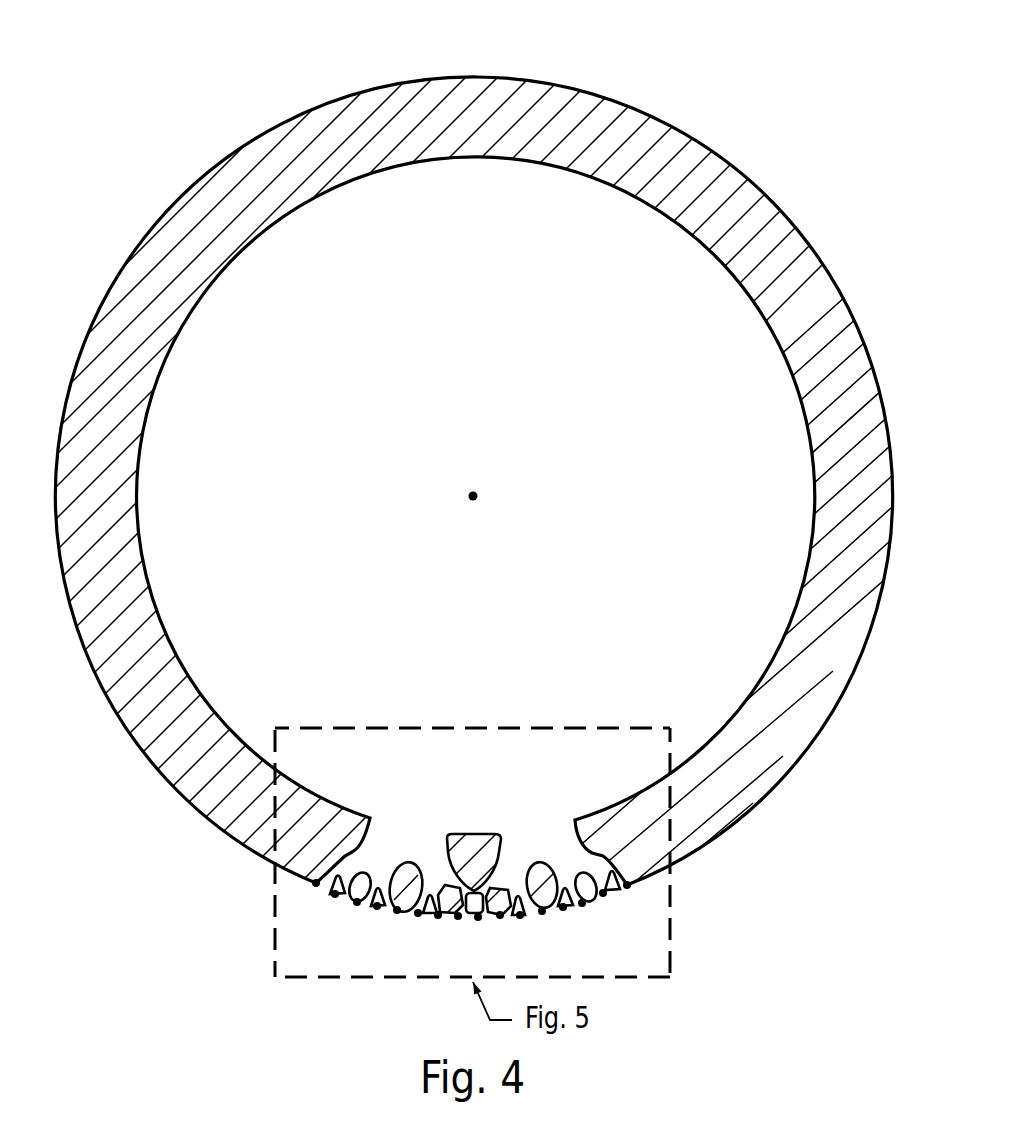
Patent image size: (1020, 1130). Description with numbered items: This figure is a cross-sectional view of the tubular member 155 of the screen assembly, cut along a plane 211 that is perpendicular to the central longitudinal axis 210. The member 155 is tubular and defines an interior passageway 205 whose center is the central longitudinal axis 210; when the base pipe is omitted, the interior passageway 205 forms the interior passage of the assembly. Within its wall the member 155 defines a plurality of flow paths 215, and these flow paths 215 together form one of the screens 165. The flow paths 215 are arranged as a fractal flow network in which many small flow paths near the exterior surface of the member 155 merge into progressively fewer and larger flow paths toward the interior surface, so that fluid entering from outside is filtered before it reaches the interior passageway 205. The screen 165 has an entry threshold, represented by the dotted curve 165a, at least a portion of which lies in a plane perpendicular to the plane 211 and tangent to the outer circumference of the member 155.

The member 155 is at (323, 108).
The plane 211 is at (632, 66).
The interior passageway 205 is at (495, 308).
The central longitudinal axis 210 is at (473, 493).
The plurality of flow paths 215 is at (537, 812).
The screen 165 is at (377, 907).
The entry threshold 165a is at (612, 894).